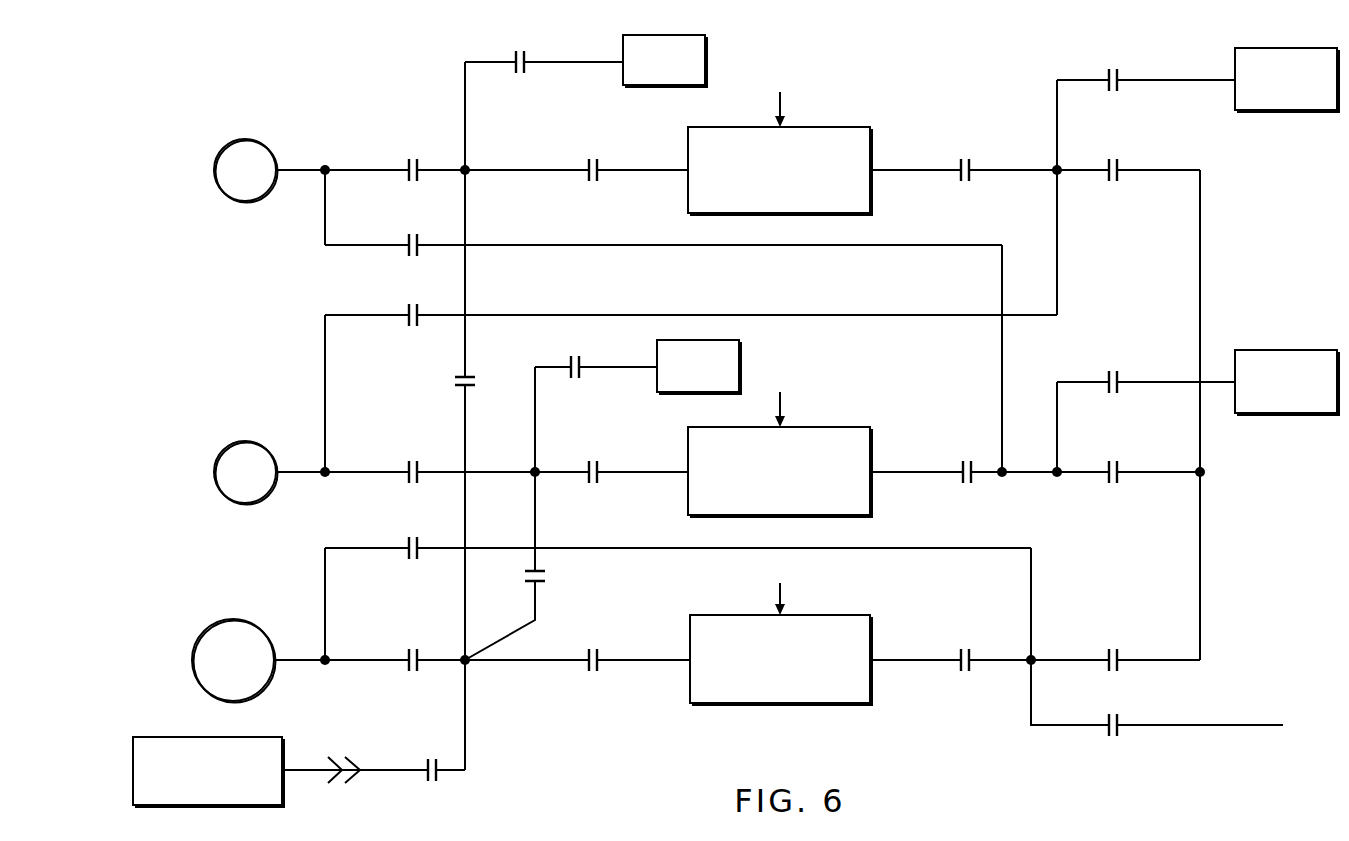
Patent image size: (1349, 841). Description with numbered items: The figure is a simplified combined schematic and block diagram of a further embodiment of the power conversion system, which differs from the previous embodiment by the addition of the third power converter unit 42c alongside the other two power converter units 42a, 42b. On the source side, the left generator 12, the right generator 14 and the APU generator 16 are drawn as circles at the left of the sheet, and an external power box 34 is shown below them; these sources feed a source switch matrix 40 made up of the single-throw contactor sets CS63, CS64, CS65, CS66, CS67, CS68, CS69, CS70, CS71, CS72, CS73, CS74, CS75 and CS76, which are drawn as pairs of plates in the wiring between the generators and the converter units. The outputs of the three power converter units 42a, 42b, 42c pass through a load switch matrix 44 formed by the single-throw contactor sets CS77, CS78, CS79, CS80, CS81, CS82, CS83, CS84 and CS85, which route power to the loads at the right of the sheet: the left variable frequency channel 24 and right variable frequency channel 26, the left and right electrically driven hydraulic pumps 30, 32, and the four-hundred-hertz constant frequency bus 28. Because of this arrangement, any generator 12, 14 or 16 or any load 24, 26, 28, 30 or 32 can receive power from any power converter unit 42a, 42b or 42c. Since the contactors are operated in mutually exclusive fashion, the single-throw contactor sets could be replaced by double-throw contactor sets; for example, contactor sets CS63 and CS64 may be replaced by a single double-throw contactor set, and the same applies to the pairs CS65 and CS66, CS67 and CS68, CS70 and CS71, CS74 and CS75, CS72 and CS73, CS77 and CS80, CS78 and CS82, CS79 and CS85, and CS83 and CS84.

The left generator 12 is at (218, 198).
The right generator 14 is at (223, 448).
The APU generator 16 is at (222, 621).
The left variable frequency channel 24 is at (706, 62).
The right variable frequency channel 26 is at (740, 366).
The 400 Hz constant frequency bus 28 is at (1217, 727).
The left electrically driven hydraulic pump 30 is at (1257, 111).
The right electrically driven hydraulic pump 32 is at (1257, 350).
The external power source 34 is at (197, 737).
The source switch matrix 40 is at (462, 800).
The power converter unit 42a is at (817, 127).
The power converter unit 42b is at (817, 427).
The third power converter unit 42c is at (817, 615).
The load switch matrix 44 is at (1065, 760).
The contactor set CS63 is at (417, 159).
The contactor set CS64 is at (417, 234).
The contactor set CS65 is at (417, 304).
The contactor set CS66 is at (417, 461).
The contactor set CS67 is at (417, 537).
The contactor set CS68 is at (417, 649).
The contactor set CS69 is at (436, 759).
The contactor set CS70 is at (457, 387).
The contactor set CS71 is at (546, 584).
The contactor set CS72 is at (516, 52).
The contactor set CS73 is at (589, 159).
The contactor set CS74 is at (571, 356).
The contactor set CS75 is at (589, 461).
The contactor set CS76 is at (589, 649).
The contactor set CS77 is at (961, 159).
The contactor set CS78 is at (971, 461).
The contactor set CS79 is at (969, 649).
The contactor set CS80 is at (1109, 69).
The contactor set CS81 is at (1109, 159).
The contactor set CS82 is at (1109, 371).
The contactor set CS83 is at (1109, 461).
The contactor set CS84 is at (1117, 649).
The contactor set CS85 is at (1117, 714).